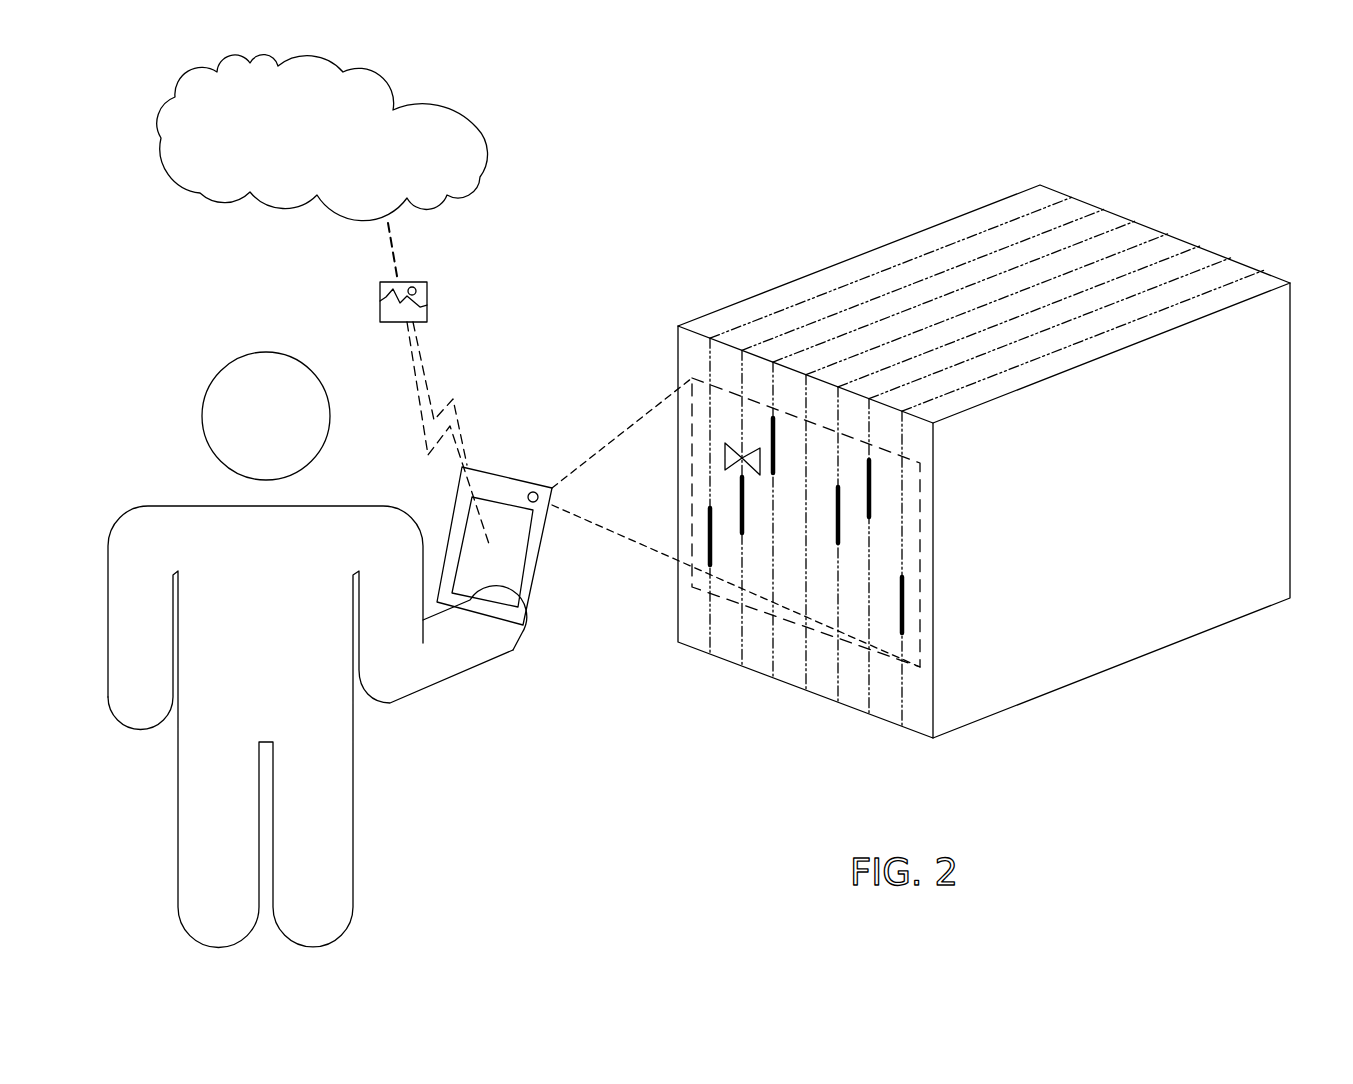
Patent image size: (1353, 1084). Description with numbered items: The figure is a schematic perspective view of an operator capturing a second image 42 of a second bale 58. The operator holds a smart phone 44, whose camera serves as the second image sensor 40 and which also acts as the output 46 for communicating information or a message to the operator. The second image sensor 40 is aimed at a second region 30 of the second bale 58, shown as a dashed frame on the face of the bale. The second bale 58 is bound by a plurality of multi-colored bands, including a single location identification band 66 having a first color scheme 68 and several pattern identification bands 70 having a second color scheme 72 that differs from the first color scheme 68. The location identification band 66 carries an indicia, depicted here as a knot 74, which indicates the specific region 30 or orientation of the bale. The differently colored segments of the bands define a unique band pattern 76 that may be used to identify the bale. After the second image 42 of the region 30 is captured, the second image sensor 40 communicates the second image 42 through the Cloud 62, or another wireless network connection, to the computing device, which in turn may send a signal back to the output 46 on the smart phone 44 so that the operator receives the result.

The region 30 is at (920, 590).
The second image sensor 40 is at (529, 526).
The second image 42 is at (380, 287).
The smart phone 44 is at (542, 542).
The output 46 is at (502, 575).
The second bale 58 is at (952, 495).
The Cloud 62 is at (321, 142).
The location identification band 66 is at (845, 307).
The first color scheme 68 is at (748, 518).
The pattern identification band 70 is at (703, 620).
The second color scheme 72 is at (707, 537).
The knot 74 is at (725, 470).
The unique band pattern 76 is at (823, 640).